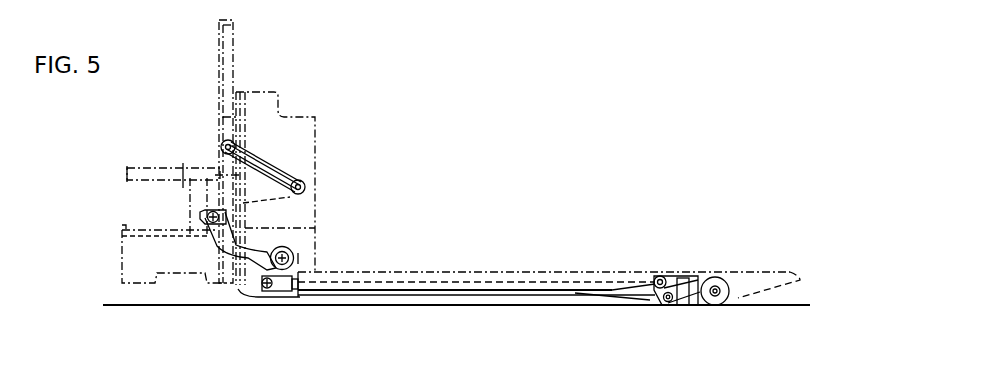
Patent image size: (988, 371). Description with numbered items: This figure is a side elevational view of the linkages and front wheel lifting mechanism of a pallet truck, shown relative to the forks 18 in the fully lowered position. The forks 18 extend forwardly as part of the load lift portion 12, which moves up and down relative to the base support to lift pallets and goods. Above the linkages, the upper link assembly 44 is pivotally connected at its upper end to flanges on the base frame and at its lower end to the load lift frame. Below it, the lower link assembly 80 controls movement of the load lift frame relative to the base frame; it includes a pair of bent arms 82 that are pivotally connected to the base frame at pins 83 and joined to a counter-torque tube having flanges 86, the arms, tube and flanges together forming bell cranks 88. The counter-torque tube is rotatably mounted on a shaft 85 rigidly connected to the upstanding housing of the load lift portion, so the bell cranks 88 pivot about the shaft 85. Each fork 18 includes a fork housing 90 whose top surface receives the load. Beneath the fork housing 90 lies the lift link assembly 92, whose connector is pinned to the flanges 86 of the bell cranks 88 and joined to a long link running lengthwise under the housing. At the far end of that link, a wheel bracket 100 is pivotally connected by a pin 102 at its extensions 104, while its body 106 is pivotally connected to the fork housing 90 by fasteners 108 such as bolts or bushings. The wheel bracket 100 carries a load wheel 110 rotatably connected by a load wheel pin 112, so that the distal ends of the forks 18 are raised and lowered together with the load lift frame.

The load lift portion 12 is at (278, 298).
The forks 18 is at (772, 290).
The upper link assembly 44 is at (293, 153).
The lower link assembly 80 is at (210, 250).
The arms 82 is at (257, 242).
The pins 83 is at (203, 213).
The shaft 85 is at (291, 252).
The flanges 86 is at (273, 279).
The bell cranks 88 is at (302, 258).
The fork housing 90 is at (525, 272).
The lift link assembly 92 is at (463, 295).
The wheel bracket 100 is at (697, 280).
The pin 102 is at (655, 287).
The extensions 104 is at (672, 278).
The body 106 is at (683, 295).
The fasteners 108 is at (667, 305).
The load wheel 110 is at (722, 302).
The load wheel pin 112 is at (722, 282).